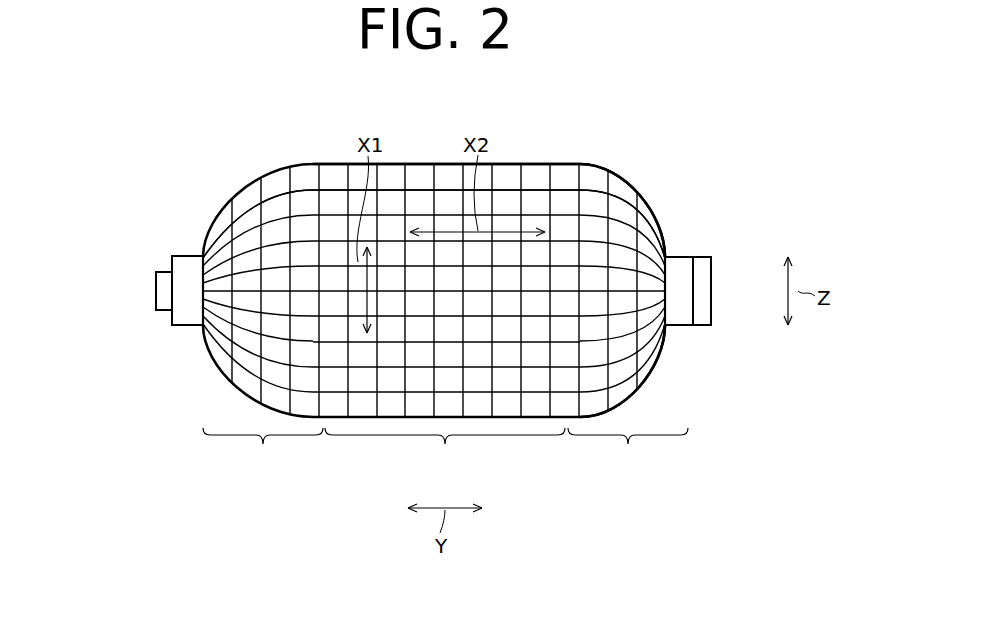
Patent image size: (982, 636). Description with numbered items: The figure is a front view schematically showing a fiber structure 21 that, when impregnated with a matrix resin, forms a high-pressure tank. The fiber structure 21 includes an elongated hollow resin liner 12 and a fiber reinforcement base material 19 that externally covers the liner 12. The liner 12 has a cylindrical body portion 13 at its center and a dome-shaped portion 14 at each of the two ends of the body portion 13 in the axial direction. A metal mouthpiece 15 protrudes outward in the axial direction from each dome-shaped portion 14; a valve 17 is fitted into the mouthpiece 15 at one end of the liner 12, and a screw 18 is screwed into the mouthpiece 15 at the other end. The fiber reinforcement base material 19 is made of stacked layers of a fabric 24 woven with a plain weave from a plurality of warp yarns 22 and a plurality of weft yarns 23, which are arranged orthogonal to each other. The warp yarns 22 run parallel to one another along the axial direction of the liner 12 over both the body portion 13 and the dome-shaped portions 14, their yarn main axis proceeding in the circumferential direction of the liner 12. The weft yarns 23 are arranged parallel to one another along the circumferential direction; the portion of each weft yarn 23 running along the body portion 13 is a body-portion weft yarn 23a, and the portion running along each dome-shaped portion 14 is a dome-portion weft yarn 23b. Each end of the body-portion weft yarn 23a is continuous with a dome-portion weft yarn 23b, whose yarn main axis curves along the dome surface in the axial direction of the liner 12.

The liner 12 is at (652, 203).
The body portion 13 is at (445, 452).
The dome-shaped portion 14 is at (445, 452).
The mouthpiece 15 is at (192, 256).
The valve 17 is at (155, 293).
The screw 18 is at (712, 313).
The fiber reinforcement base material 19 is at (606, 188).
The fiber structure 21 is at (576, 128).
The warp yarn 22 is at (308, 169).
The weft yarn 23 is at (245, 210).
The body-portion weft yarn 23a is at (503, 188).
The dome-portion weft yarn 23b is at (272, 195).
The fabric 24 is at (650, 352).